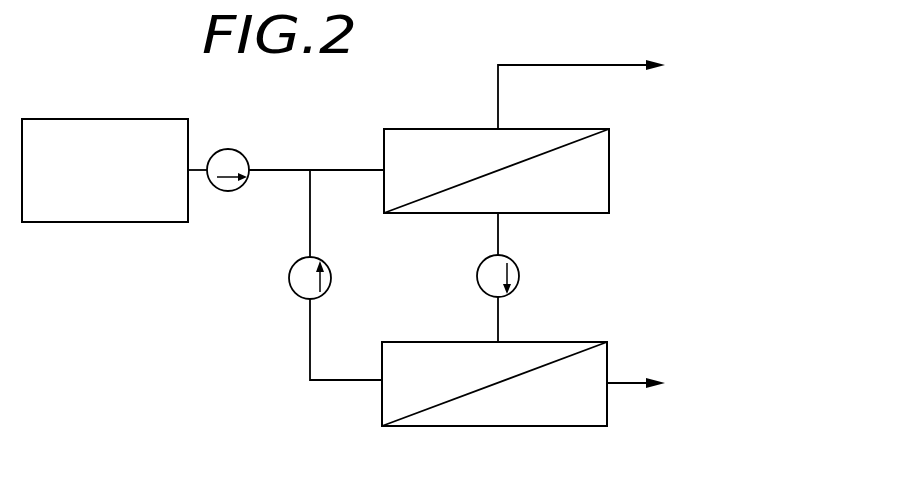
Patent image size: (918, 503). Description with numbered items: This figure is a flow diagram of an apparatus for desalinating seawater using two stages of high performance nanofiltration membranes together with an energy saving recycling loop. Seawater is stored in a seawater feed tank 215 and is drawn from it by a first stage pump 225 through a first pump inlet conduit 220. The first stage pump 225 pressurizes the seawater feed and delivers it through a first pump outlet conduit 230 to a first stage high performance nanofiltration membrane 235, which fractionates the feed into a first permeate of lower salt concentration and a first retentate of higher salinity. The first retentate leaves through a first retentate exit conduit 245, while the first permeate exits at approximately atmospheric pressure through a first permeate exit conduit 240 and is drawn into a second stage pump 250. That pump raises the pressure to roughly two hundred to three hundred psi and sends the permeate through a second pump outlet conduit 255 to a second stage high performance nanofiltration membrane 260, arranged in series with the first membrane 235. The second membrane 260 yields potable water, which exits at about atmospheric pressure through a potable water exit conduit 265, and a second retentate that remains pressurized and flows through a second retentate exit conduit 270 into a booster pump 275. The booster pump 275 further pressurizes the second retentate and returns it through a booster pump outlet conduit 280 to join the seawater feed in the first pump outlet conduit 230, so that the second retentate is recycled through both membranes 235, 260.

The seawater feed tank 215 is at (100, 118).
The first pump inlet conduit 220 is at (197, 165).
The first stage pump 225 is at (228, 191).
The first pump outlet conduit 230 is at (345, 170).
The first stage high performance nanofiltration membrane 235 is at (590, 178).
The first permeate exit conduit 240 is at (498, 230).
The first retentate exit conduit 245 is at (558, 65).
The second stage pump 250 is at (477, 282).
The second pump outlet conduit 255 is at (498, 316).
The second stage high performance nanofiltration membrane 260 is at (560, 405).
The potable water exit conduit 265 is at (628, 382).
The second retentate exit conduit 270 is at (331, 383).
The booster pump 275 is at (292, 291).
The booster pump outlet conduit 280 is at (310, 223).